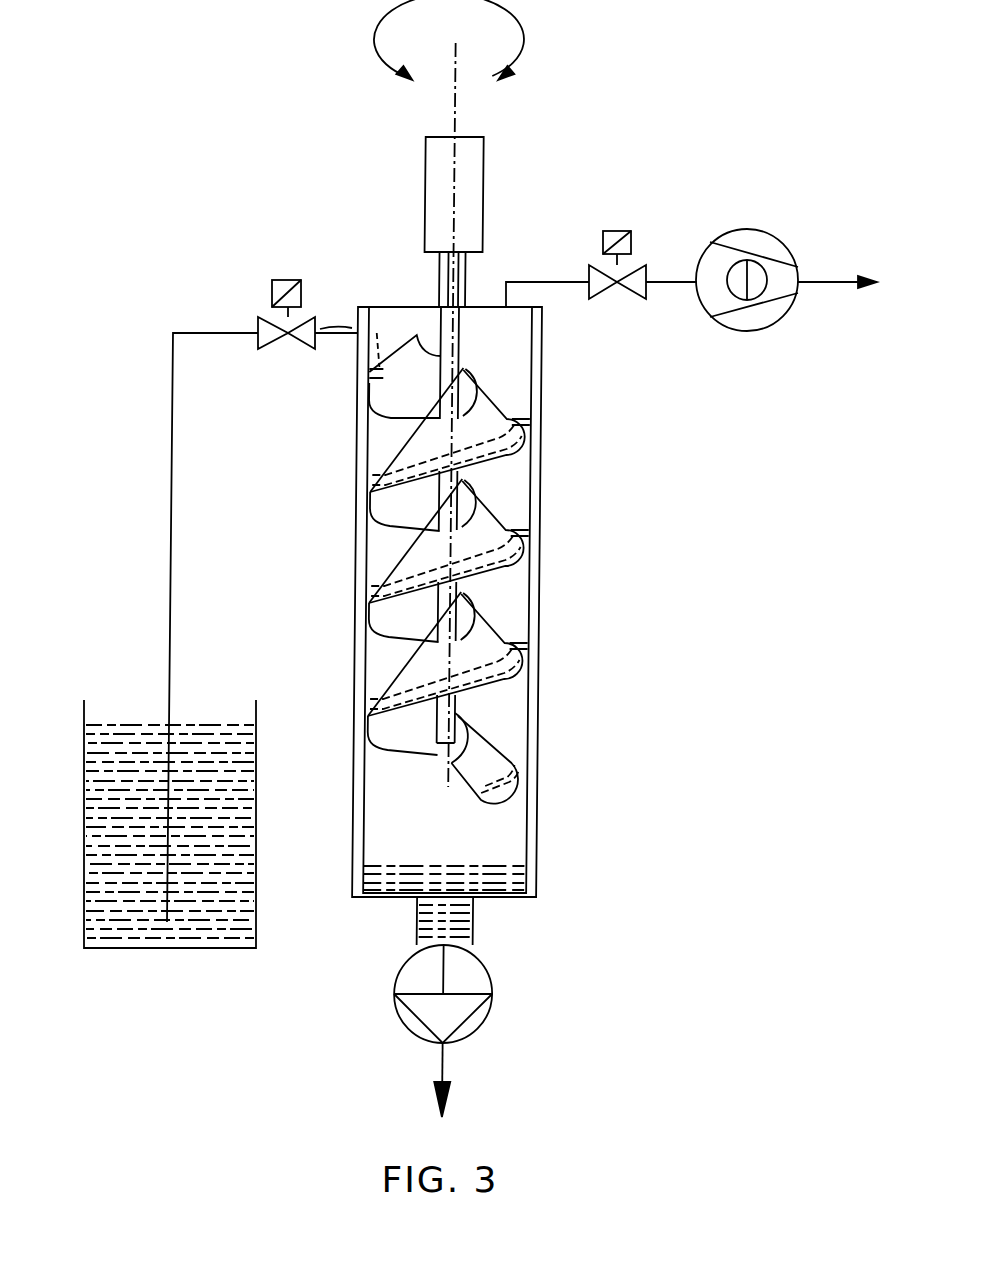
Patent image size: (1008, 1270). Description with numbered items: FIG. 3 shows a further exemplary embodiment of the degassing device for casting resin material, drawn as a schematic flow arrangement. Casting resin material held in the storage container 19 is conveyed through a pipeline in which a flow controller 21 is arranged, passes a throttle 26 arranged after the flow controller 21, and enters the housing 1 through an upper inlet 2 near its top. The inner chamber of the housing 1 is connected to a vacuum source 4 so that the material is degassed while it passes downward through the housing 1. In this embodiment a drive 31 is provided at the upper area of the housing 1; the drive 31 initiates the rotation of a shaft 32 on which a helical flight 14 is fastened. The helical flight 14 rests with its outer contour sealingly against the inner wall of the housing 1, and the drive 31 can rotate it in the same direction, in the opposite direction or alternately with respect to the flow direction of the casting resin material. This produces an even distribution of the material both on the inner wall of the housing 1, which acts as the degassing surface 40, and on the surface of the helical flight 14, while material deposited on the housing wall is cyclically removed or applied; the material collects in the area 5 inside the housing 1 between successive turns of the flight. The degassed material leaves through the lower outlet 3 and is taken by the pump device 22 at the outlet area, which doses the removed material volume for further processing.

The housing 1 is at (532, 605).
The upper inlet 2 is at (357, 318).
The lower outlet 3 is at (467, 913).
The vacuum source 4 is at (746, 238).
The area 5 is at (513, 488).
The helical flight 14 is at (477, 668).
The storage container 19 is at (217, 930).
The flow controller 21 is at (259, 325).
The pump device 22 is at (393, 1000).
The throttle 26 is at (340, 338).
The drive 31 is at (465, 175).
The shaft 32 is at (458, 344).
The degassing surface 40 is at (372, 543).